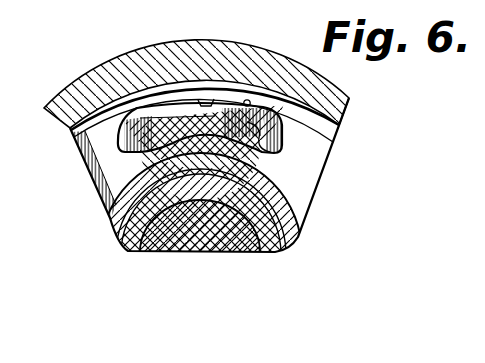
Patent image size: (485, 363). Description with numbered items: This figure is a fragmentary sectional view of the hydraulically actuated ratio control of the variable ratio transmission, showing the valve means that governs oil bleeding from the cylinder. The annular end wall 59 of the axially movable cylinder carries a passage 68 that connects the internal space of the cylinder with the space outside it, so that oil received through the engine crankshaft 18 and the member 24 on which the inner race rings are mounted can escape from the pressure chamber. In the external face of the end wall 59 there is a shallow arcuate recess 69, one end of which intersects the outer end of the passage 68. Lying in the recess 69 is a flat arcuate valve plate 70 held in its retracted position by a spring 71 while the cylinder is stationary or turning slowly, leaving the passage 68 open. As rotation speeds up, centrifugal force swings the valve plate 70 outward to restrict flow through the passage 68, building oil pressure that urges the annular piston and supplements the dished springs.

The end wall 59 is at (315, 152).
The spring 71 is at (163, 107).
The valve plate 70 is at (260, 158).
The arcuate recess 69 is at (207, 98).
The passage 68 is at (248, 100).
The member 24 is at (296, 219).
The engine crankshaft 18 is at (267, 252).